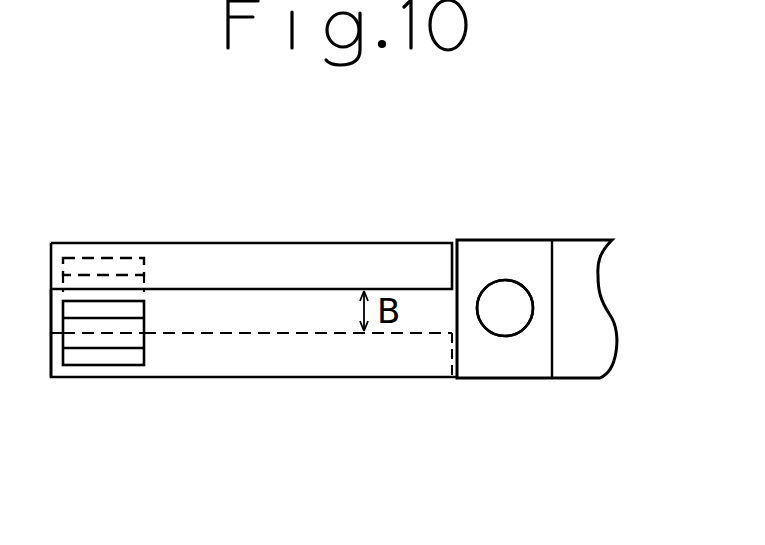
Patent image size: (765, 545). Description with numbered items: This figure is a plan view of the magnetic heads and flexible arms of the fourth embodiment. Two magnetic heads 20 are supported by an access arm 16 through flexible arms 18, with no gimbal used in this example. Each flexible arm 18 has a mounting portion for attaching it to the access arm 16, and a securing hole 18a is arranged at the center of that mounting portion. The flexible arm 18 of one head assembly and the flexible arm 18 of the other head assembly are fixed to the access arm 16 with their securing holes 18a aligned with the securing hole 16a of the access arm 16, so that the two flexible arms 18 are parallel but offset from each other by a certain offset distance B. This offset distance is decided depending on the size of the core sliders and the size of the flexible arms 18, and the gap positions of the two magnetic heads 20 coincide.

The access arm 16 is at (513, 260).
The securing hole 16a is at (505, 323).
The flexible arm 18 is at (303, 263).
The securing hole 18a is at (505, 308).
The magnetic head 20 is at (97, 257).